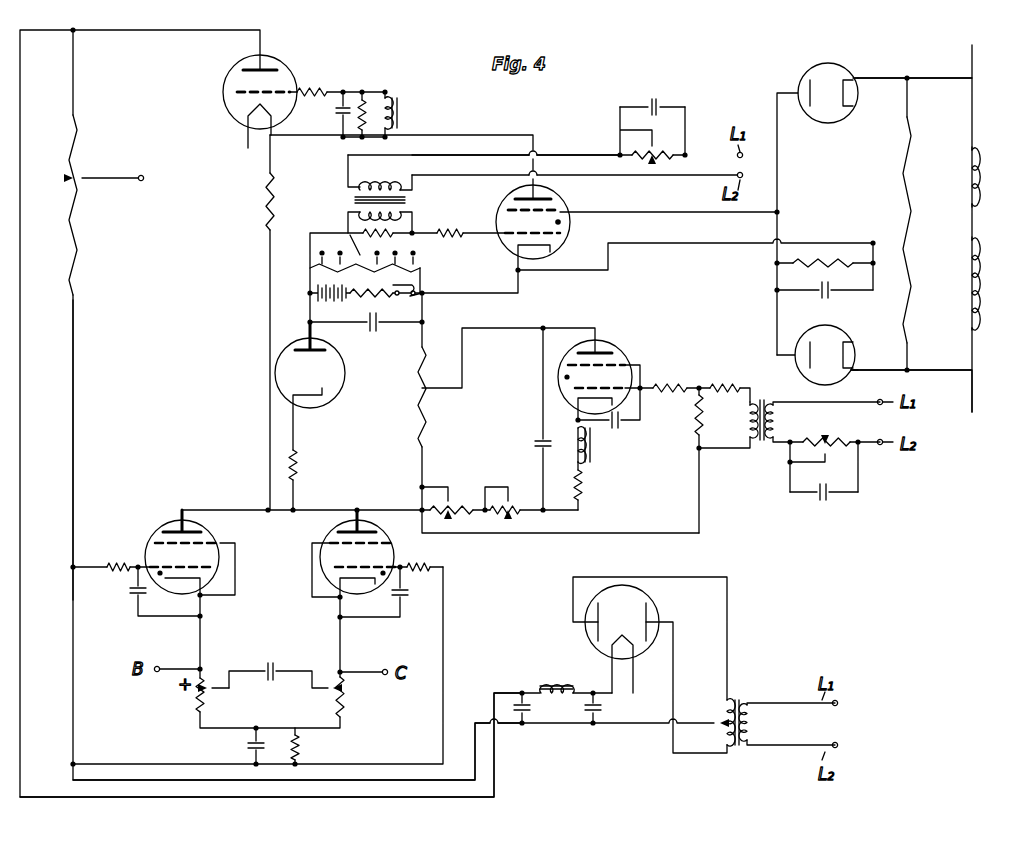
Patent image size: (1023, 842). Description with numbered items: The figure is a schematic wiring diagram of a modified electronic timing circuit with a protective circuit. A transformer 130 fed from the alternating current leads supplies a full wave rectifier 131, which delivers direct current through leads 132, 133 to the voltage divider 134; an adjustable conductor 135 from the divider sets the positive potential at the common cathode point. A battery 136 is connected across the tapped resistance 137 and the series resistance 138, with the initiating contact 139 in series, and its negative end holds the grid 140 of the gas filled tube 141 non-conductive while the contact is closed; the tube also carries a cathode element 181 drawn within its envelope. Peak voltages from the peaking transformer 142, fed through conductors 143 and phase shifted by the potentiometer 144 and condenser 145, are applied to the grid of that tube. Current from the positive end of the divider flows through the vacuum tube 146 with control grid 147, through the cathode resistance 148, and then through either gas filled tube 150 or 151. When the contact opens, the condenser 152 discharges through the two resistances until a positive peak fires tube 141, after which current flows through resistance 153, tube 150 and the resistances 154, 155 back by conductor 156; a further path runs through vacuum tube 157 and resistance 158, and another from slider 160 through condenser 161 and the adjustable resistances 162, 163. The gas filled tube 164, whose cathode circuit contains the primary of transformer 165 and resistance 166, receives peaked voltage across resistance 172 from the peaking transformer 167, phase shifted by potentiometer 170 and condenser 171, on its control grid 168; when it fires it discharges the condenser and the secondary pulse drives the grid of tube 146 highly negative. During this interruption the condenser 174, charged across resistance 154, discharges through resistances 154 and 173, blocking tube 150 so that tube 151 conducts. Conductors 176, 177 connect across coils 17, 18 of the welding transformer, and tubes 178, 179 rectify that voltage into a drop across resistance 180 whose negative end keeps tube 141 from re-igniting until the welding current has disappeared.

The coil 17 is at (980, 292).
The coil 18 is at (980, 165).
The transformer 130 is at (780, 686).
The full wave rectifier 131 is at (585, 637).
The lead 132 is at (494, 745).
The lead 133 is at (477, 775).
The voltage divider 134 is at (78, 253).
The conductor 135 is at (113, 176).
The battery 136 is at (310, 298).
The resistance 137 is at (310, 268).
The resistance 138 is at (418, 286).
The initiating contact 139 is at (414, 297).
The grid 140 is at (520, 232).
The gas filled grid controlled tube 141 is at (568, 202).
The peaking transformer 142 is at (404, 179).
The conductors 143 is at (577, 154).
The potentiometer 144 is at (660, 142).
The condenser 145 is at (658, 104).
The vacuum tube 146 is at (289, 65).
The control grid 147 is at (243, 85).
The resistance 148 is at (268, 200).
The gas filled grid controlled tube 150 is at (158, 531).
The gas filled grid controlled tube 151 is at (350, 522).
The condenser 152 is at (374, 326).
The resistance 153 is at (420, 400).
The resistance 154 is at (198, 690).
The resistance 155 is at (308, 752).
The conductor 156 is at (78, 400).
The vacuum tube 157 is at (285, 393).
The resistance 158 is at (290, 465).
The slider 160 is at (448, 390).
The condenser 161 is at (535, 443).
The adjustable resistance 162 is at (513, 518).
The adjustable resistance 163 is at (465, 518).
The gas filled grid controlled tube 164 is at (618, 346).
The transformer 165 is at (420, 86).
The resistance 166 is at (585, 490).
The peaking transformer 167 is at (777, 480).
The control grid 168 is at (606, 386).
The potentiometer 170 is at (832, 452).
The condenser 171 is at (832, 496).
The resistance 172 is at (697, 420).
The resistance 173 is at (338, 692).
The condenser 174 is at (271, 660).
The conductor 176 is at (948, 78).
The conductor 177 is at (974, 371).
The tube 178 is at (827, 63).
The tube 179 is at (850, 341).
The resistance 180 is at (824, 260).
The cathode of tube 181 is at (562, 223).